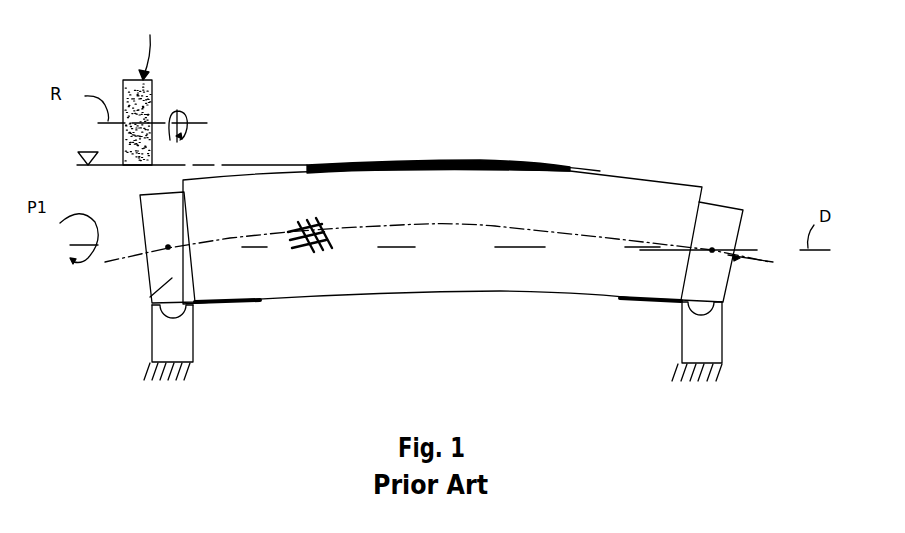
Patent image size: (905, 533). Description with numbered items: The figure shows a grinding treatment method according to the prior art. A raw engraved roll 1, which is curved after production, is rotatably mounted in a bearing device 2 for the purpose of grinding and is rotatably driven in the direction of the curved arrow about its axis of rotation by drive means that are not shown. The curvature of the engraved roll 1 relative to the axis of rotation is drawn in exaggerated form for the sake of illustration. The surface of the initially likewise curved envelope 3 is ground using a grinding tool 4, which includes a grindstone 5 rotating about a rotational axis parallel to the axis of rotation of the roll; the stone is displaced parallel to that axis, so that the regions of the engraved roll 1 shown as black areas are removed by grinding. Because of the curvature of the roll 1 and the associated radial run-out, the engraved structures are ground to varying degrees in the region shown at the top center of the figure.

The engraved roll 1 is at (670, 198).
The bearing device 2 is at (180, 340).
The envelope 3 is at (567, 165).
The grinding tool 4 is at (143, 97).
The grindstone 5 is at (146, 44).